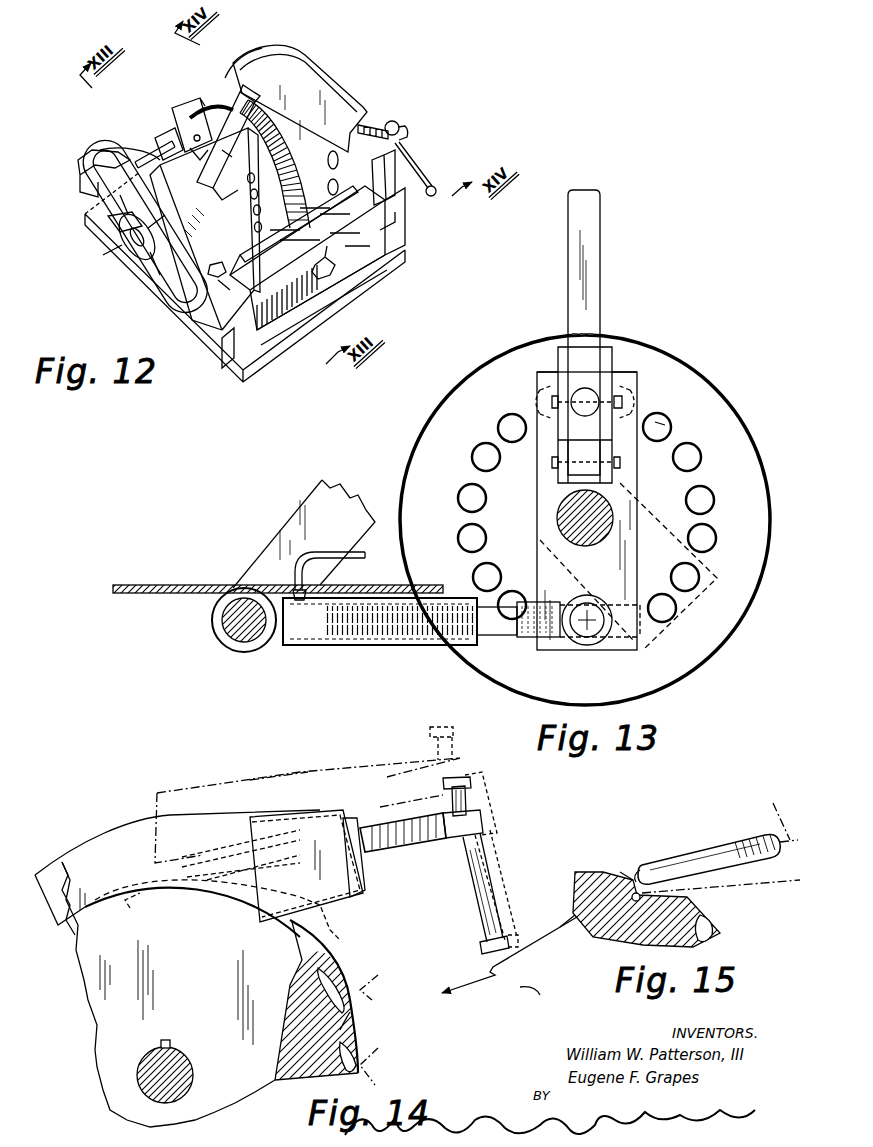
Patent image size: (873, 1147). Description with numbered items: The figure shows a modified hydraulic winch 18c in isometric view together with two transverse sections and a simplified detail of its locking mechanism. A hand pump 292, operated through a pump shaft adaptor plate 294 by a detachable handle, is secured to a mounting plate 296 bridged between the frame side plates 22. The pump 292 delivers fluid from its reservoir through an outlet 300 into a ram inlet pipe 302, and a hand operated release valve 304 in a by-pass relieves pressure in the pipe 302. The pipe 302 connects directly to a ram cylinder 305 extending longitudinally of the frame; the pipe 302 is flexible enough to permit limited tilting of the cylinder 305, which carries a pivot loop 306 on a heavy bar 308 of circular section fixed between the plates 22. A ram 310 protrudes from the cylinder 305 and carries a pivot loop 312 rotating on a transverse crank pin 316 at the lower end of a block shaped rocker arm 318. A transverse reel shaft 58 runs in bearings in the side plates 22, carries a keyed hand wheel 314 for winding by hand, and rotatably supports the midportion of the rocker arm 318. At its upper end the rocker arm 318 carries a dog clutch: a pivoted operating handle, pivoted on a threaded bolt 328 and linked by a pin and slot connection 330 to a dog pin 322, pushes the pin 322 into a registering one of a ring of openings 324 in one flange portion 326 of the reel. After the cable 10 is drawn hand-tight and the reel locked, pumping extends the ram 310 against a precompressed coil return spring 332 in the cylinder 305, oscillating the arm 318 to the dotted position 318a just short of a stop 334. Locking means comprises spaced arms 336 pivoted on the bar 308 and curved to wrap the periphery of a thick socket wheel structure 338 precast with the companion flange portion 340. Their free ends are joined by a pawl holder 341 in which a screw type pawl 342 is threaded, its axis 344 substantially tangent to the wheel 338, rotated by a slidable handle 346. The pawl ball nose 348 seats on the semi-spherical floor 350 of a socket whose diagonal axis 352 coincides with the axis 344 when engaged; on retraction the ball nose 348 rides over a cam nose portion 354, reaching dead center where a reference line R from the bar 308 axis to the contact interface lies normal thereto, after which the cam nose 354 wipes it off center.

In FIG. 13, the cable 10 is at (122, 584).
In FIG. 12, the hydraulic winch 18c is at (170, 308).
In FIG. 13, the hydraulic winch 18c is at (480, 365).
In FIG. 12, the frame side plates 22 is at (390, 205).
In FIG. 13, the transverse reel shaft 58 is at (556, 513).
In FIG. 14, the transverse reel shaft 58 is at (137, 1064).
In FIG. 12, the hand pump 292 is at (360, 254).
In FIG. 12, the pump shaft adaptor plate 294 is at (335, 270).
In FIG. 12, the mounting plate 296 is at (300, 330).
In FIG. 12, the outlet 300 is at (197, 320).
In FIG. 13, the ram inlet pipe 302 is at (375, 543).
In FIG. 12, the hand operated release valve 304 is at (310, 308).
In FIG. 13, the ram cylinder 305 is at (410, 600).
In FIG. 13, the pivot loop 306 is at (235, 585).
In FIG. 12, the heavy bar 308 is at (88, 185).
In FIG. 13, the heavy bar 308 is at (222, 622).
In FIG. 13, the ram 310 is at (490, 636).
In FIG. 13, the pivot loop 312 is at (605, 648).
In FIG. 12, the hand wheel 314 is at (120, 265).
In FIG. 13, the transverse crank pin 316 is at (583, 610).
In FIG. 12, the rocker arm 318 is at (205, 108).
In FIG. 13, the rocker arm 318 is at (537, 528).
In FIG. 13, the dotted-line position of rocker arm 318a is at (735, 618).
In FIG. 12, the dog pin 322 is at (152, 152).
In FIG. 13, the dog pin 322 is at (600, 400).
In FIG. 12, the ring of openings 324 is at (190, 115).
In FIG. 13, the ring of openings 324 is at (672, 428).
In FIG. 12, the flange portion 326 is at (205, 105).
In FIG. 13, the flange portion 326 is at (735, 422).
In FIG. 13, the threaded bolt 328 is at (553, 468).
In FIG. 13, the pin and slot connection 330 is at (552, 375).
In FIG. 13, the coil return spring 332 is at (375, 648).
In FIG. 12, the stop 334 is at (155, 128).
In FIG. 12, the spaced arms 336 is at (308, 70).
In FIG. 13, the spaced arms 336 is at (322, 495).
In FIG. 14, the spaced arms 336 is at (80, 860).
In FIG. 12, the socket wheel structure 338 is at (340, 158).
In FIG. 14, the socket wheel structure 338 is at (322, 965).
In FIG. 15, the socket wheel structure 338 is at (573, 878).
In FIG. 12, the companion flange portion 340 is at (360, 188).
In FIG. 12, the pawl holder 341 is at (372, 124).
In FIG. 14, the pawl holder 341 is at (365, 878).
In FIG. 12, the screw type pawl 342 is at (402, 128).
In FIG. 14, the screw type pawl 342 is at (402, 822).
In FIG. 15, the screw type pawl 342 is at (717, 845).
In FIG. 14, the pawl axis 344 is at (525, 810).
In FIG. 12, the slidable handle 346 is at (420, 170).
In FIG. 14, the slidable handle 346 is at (478, 903).
In FIG. 15, the ball nose 348 is at (632, 872).
In FIG. 14, the semi-spherical floor 350 is at (140, 905).
In FIG. 15, the semi-spherical floor 350 is at (637, 900).
In FIG. 14, the socket axes 352 is at (388, 1029).
In FIG. 15, the socket axes 352 is at (721, 848).
In FIG. 14, the cam nose portion 354 is at (355, 1027).
In FIG. 15, the cam nose portion 354 is at (625, 872).
In FIG. 14, the reference line R is at (509, 963).